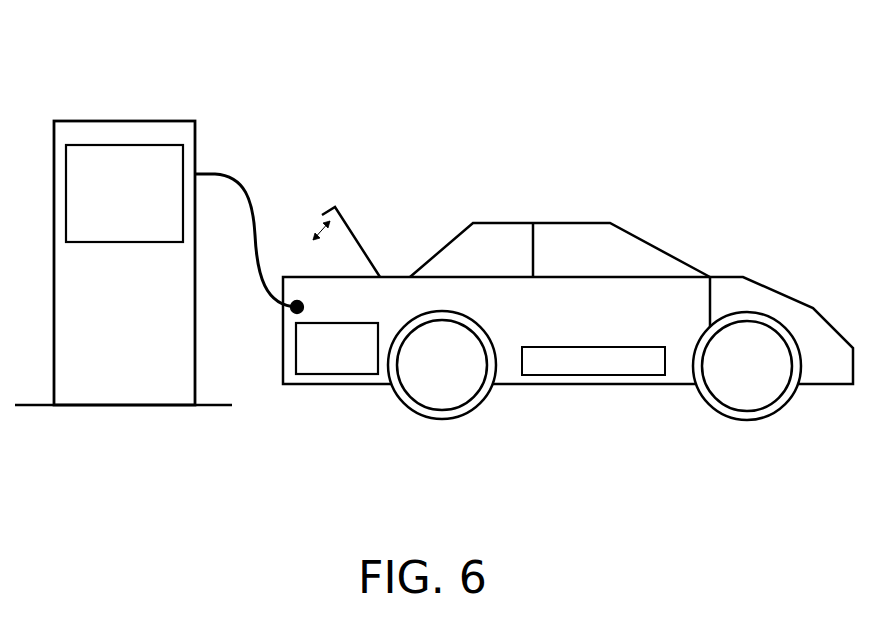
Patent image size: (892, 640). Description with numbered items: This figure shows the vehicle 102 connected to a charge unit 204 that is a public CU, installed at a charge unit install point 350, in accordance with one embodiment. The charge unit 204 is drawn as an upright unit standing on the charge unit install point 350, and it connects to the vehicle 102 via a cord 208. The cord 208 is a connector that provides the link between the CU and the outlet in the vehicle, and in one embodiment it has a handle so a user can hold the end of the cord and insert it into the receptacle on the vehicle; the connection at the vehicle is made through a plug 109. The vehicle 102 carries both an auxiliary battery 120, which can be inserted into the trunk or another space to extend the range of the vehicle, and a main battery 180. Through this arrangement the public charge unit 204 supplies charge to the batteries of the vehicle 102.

The charge unit 204 is at (172, 121).
The cord 208 is at (245, 190).
The vehicle 102 is at (565, 222).
The plug 109 is at (303, 307).
The auxiliary battery 120 is at (382, 325).
The main battery 180 is at (620, 347).
The charge unit install point 350 is at (230, 418).